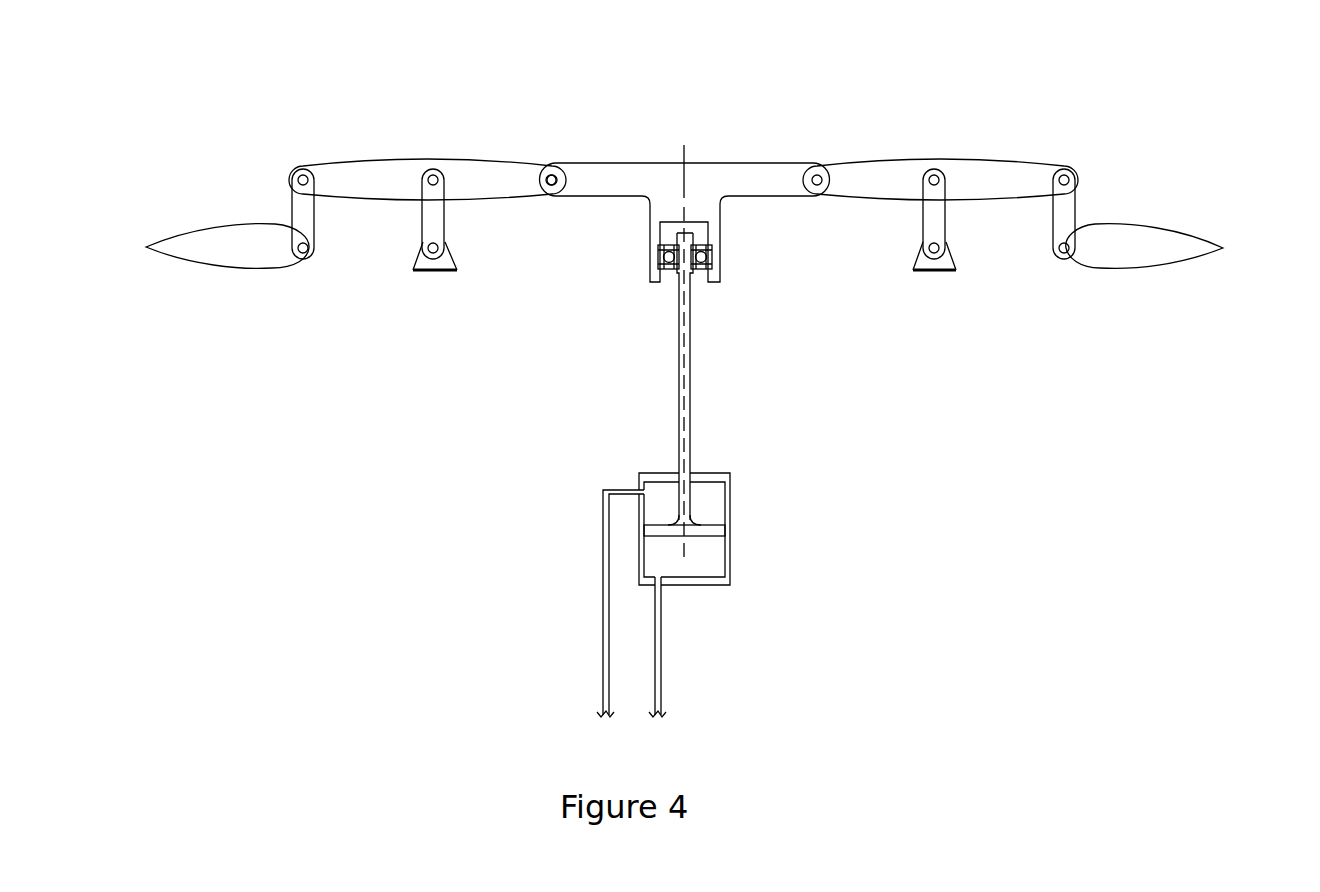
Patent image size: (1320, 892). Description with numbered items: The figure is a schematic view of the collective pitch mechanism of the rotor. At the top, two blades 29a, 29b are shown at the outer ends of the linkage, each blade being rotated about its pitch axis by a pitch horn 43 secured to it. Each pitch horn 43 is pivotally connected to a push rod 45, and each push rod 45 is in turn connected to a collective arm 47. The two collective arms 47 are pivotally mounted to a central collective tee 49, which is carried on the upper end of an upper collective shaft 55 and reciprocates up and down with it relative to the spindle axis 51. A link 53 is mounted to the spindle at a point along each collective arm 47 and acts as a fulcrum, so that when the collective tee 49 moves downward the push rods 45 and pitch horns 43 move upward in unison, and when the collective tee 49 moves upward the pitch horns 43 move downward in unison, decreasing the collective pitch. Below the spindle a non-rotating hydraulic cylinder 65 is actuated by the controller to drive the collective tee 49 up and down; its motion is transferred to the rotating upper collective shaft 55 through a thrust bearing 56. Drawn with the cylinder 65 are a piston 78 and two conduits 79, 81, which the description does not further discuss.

The blade 29a is at (1142, 268).
The blade 29b is at (258, 272).
The pitch horn 43 is at (1068, 240).
The push rod 45 is at (1077, 205).
The collective arm 47 is at (882, 163).
The collective tee 49 is at (740, 162).
The spindle axis 51 is at (934, 276).
The link 53 is at (947, 222).
The upper collective shaft 55 is at (678, 220).
The thrust bearing 56 is at (656, 255).
The hydraulic cylinder 65 is at (710, 588).
The piston 78 is at (709, 536).
The conduit 79 is at (662, 667).
The conduit 81 is at (602, 676).